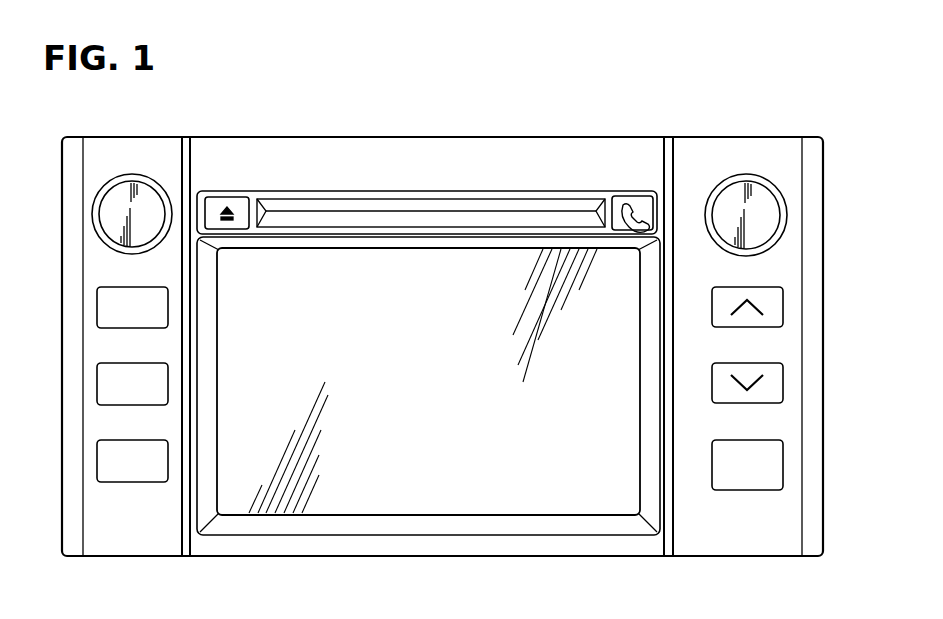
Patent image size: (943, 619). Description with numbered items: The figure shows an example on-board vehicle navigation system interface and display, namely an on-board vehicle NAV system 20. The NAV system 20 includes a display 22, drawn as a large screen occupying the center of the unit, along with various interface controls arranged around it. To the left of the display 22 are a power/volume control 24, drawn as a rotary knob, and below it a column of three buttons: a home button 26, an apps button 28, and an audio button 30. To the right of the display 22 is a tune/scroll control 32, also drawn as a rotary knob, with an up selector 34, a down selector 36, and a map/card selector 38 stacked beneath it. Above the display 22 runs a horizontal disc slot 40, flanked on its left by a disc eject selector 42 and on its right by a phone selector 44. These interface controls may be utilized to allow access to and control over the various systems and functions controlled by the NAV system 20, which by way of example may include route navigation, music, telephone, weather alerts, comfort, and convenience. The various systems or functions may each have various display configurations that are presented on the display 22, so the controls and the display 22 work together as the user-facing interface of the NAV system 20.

The on-board vehicle NAV system 20 is at (442, 290).
The display 22 is at (434, 383).
The power/volume control 24 is at (112, 214).
The home button 26 is at (97, 307).
The apps button 28 is at (97, 383).
The audio button 30 is at (97, 462).
The tune/scroll control 32 is at (763, 218).
The up selector 34 is at (785, 307).
The down selector 36 is at (785, 383).
The map/card selector 38 is at (785, 466).
The disc slot 40 is at (380, 212).
The disc eject selector 42 is at (242, 205).
The phone selector 44 is at (640, 200).